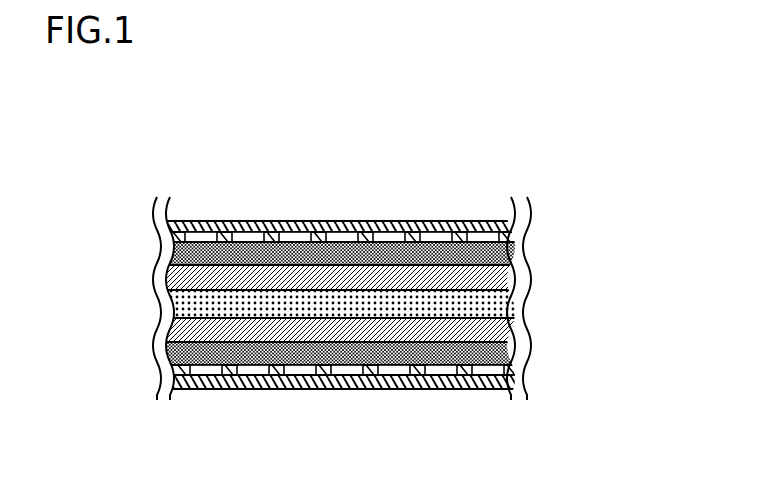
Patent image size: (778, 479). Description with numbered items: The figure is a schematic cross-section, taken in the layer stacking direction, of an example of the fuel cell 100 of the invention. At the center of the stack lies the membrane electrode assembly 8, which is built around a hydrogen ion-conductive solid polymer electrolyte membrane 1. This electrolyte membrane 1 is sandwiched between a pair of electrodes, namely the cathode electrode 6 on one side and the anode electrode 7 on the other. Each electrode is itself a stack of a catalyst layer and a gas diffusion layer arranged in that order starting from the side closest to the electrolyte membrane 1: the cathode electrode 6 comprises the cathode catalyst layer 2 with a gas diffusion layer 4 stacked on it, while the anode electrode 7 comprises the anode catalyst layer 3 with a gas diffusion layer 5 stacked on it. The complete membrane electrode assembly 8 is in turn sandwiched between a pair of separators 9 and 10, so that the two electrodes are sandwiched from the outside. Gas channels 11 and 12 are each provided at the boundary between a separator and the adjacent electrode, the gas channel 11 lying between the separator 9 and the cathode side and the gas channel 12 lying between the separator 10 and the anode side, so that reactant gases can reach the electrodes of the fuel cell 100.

The fuel cell 100 is at (412, 284).
The solid polymer electrolyte membrane 1 is at (486, 302).
The cathode catalyst layer 2 is at (486, 276).
The anode catalyst layer 3 is at (486, 327).
The gas diffusion layer 4 is at (486, 254).
The gas diffusion layer 5 is at (486, 351).
The cathode electrode 6 is at (389, 270).
The anode electrode 7 is at (389, 345).
The membrane electrode assembly 8 is at (412, 307).
The separator 9 is at (346, 221).
The separator 10 is at (350, 389).
The gas channel 11 is at (474, 221).
The gas channel 12 is at (483, 389).